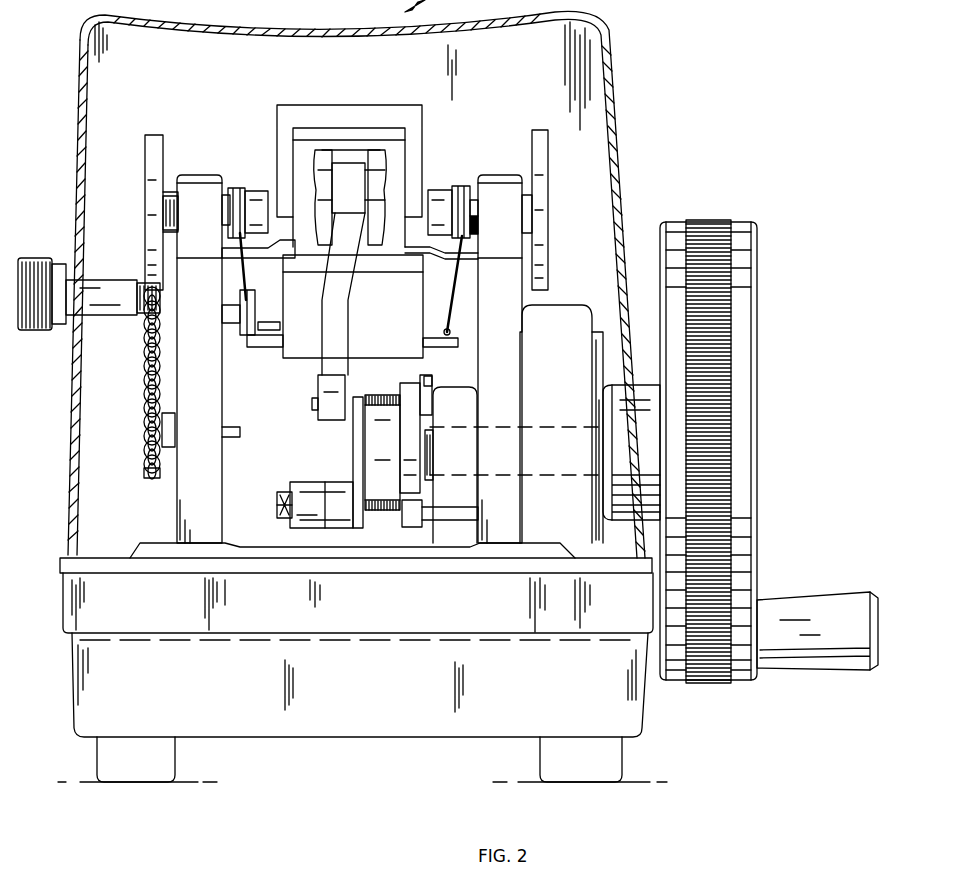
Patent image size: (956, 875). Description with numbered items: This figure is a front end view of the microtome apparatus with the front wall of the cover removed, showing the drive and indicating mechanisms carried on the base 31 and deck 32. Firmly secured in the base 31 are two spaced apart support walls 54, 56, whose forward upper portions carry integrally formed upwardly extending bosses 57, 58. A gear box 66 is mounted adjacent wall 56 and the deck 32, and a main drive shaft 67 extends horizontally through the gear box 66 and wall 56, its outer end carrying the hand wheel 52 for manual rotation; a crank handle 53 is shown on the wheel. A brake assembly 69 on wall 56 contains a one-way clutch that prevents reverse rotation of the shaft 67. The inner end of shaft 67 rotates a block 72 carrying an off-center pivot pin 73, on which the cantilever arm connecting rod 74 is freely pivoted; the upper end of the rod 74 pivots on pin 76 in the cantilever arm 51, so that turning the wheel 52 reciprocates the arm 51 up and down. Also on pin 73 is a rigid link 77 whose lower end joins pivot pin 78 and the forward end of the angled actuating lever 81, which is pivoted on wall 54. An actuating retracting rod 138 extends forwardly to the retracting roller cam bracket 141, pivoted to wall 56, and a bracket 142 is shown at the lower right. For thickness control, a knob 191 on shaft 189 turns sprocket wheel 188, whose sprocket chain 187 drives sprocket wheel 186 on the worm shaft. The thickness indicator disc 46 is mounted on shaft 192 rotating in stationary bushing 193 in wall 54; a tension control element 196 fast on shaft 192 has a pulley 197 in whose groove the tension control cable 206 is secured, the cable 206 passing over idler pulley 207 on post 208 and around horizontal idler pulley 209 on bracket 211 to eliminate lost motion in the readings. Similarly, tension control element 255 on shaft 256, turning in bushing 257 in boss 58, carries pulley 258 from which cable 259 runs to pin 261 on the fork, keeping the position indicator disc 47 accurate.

The base 31 is at (87, 674).
The deck 32 is at (90, 558).
The thickness indicator disc 46 is at (148, 140).
The position indicator disc 47 is at (548, 152).
The cantilever arm 51 is at (287, 112).
The hand wheel 52 is at (741, 235).
The crank handle 53 is at (805, 612).
The support wall 54 is at (208, 359).
The support wall 56 is at (500, 359).
The boss 57 is at (204, 183).
The boss 58 is at (504, 183).
The gear box 66 is at (561, 424).
The main drive shaft 67 is at (574, 481).
The brake assembly 69 is at (517, 465).
The block 72 is at (382, 452).
The pivot pin 73 is at (312, 405).
The cantilever arm connecting rod 74 is at (338, 320).
The pivot pin 76 is at (318, 170).
The rigid link 77 is at (353, 452).
The pivot pin 78 is at (277, 503).
The angled actuating lever 81 is at (300, 492).
The actuating retracting rod 138 is at (408, 422).
The retracting roller cam bracket 141 is at (392, 400).
The support bracket 142 is at (447, 520).
The sprocket wheel 186 is at (143, 470).
The sprocket chain 187 is at (146, 378).
The sprocket wheel 188 is at (143, 332).
The shaft 189 is at (107, 290).
The thickness control knob 191 is at (37, 332).
The shaft 192 is at (163, 212).
The bushing 193 is at (171, 192).
The tension control element 196 is at (256, 198).
The pulley 197 is at (237, 188).
The tension control cable 206 is at (246, 238).
The idler pulley 207 is at (255, 302).
The post 208 is at (231, 324).
The horizontal idler pulley 209 is at (262, 330).
The bracket 211 is at (270, 348).
The tension control element 255 is at (440, 190).
The shaft 256 is at (533, 206).
The bushing 257 is at (474, 230).
The pulley 258 is at (459, 188).
The cable 259 is at (455, 312).
The pin 261 is at (460, 343).